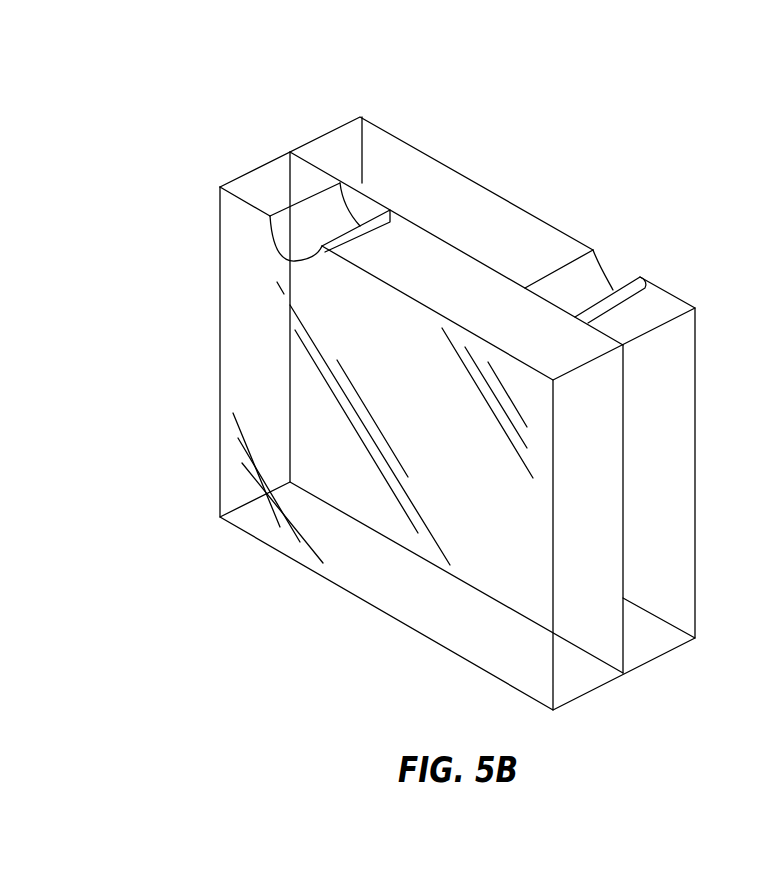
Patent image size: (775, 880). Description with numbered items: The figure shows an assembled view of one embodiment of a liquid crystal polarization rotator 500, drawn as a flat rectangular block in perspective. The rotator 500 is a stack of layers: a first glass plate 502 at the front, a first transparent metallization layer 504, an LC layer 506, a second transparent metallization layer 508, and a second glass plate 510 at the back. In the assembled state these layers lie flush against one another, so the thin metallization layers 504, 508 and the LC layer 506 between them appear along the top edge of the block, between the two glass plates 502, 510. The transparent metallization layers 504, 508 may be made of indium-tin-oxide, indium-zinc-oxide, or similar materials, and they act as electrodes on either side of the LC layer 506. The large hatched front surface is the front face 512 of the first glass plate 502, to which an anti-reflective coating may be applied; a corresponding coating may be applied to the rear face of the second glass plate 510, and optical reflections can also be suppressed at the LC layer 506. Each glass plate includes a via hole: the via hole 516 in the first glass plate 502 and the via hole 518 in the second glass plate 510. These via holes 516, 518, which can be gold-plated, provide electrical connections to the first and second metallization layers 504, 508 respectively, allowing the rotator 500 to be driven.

The liquid crystal polarization rotator 500 is at (157, 78).
The first glass plate 502 is at (255, 170).
The first transparent metallization layer 504 is at (435, 223).
The LC layer 506 is at (452, 233).
The second transparent metallization layer 508 is at (468, 245).
The second glass plate 510 is at (325, 133).
The front face 512 is at (266, 402).
The via hole 516 is at (308, 239).
The via hole 518 is at (578, 283).